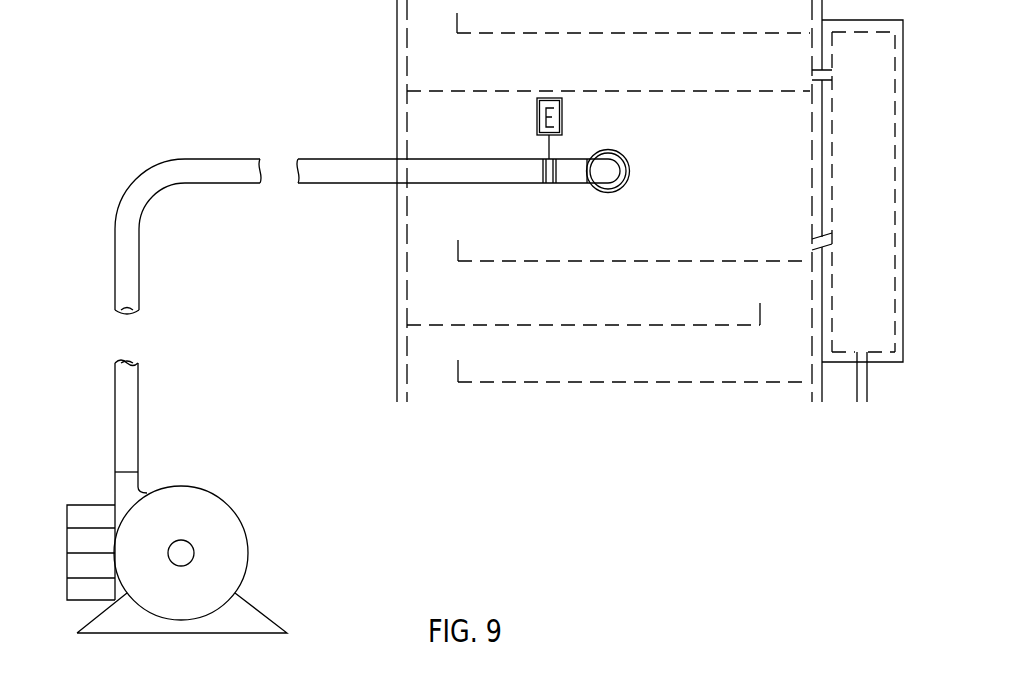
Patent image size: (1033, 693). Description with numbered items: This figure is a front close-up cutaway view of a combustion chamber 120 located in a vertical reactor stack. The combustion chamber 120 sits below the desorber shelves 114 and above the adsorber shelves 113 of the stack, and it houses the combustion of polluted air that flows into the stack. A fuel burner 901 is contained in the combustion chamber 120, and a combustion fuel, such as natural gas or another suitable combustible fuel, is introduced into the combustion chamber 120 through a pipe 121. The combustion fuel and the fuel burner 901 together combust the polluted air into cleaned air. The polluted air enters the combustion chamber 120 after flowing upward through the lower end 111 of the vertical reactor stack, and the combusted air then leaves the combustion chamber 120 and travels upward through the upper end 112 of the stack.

The lower end 111 is at (397, 382).
The upper end 112 is at (397, 13).
The adsorber shelves 113 is at (465, 262).
The desorber shelves 114 is at (490, 33).
The combustion chamber 120 is at (775, 147).
The pipe 121 is at (132, 178).
The fuel burner 901 is at (602, 168).